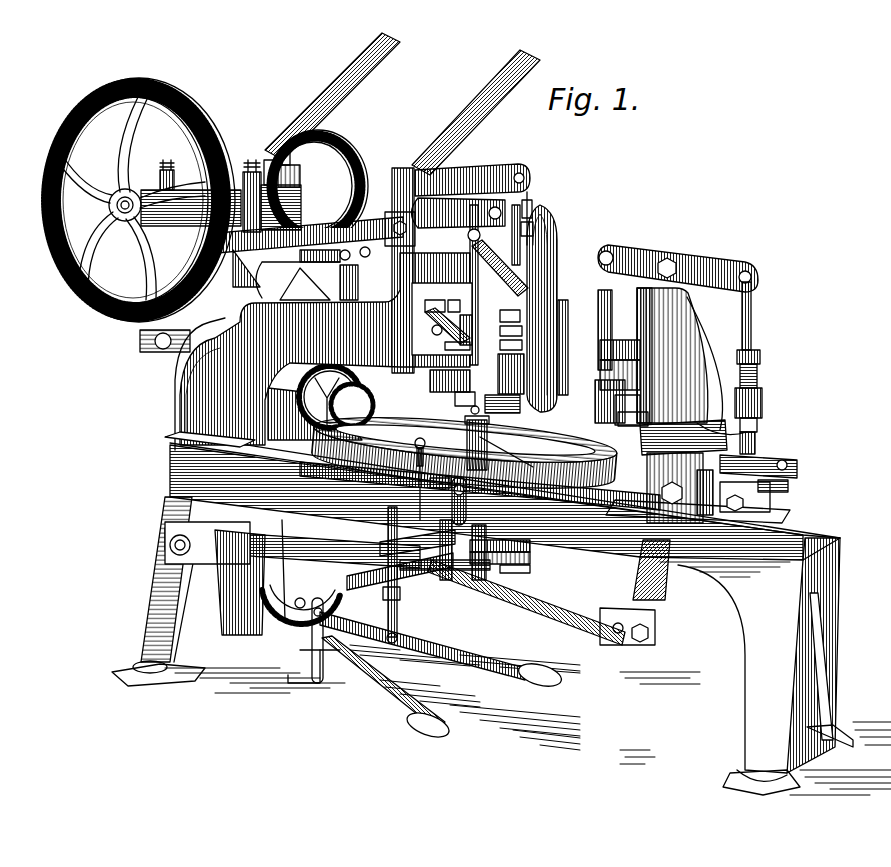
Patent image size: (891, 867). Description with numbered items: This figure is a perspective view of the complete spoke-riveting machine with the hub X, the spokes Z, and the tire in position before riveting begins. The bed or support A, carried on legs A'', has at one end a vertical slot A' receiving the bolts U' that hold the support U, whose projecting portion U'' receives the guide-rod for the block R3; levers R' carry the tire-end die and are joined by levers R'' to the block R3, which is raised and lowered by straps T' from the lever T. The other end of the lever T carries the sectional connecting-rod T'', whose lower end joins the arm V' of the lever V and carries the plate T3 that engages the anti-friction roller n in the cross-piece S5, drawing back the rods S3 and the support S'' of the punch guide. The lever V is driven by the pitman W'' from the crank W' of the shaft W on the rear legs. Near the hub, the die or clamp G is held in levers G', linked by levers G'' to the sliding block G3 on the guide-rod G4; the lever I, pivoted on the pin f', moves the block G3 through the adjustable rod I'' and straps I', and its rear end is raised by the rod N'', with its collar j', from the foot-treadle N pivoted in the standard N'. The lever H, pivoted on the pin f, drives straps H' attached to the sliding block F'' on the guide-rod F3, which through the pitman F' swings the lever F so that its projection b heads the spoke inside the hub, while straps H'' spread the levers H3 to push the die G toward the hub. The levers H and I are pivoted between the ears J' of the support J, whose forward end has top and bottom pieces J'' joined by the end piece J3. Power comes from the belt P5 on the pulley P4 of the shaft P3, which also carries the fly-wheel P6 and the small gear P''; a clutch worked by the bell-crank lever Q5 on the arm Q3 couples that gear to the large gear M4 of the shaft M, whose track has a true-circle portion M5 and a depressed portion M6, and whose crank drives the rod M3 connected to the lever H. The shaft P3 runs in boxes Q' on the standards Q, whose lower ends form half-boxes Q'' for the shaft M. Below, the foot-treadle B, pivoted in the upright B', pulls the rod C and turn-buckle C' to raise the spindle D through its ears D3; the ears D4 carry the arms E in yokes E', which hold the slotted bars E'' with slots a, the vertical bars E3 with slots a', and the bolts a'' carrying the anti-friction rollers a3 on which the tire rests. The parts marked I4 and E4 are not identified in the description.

The bed or support A is at (505, 525).
The vertical slot A' is at (707, 512).
The legs A'' is at (501, 646).
The rod M3 is at (165, 292).
The shaft P3 is at (112, 206).
The standards Q is at (191, 212).
The boxes Q' is at (177, 173).
The half-boxes Q'' is at (149, 342).
The shaft M is at (160, 348).
The small gear-wheel P'' is at (249, 188).
The arm Q3 is at (268, 160).
The bell-crank lever Q5 is at (298, 168).
The pulley P4 is at (318, 185).
The fly-wheel P6 is at (301, 96).
The belt P5 is at (476, 112).
The ears J' is at (316, 232).
The support J is at (308, 271).
The pin or bolt f is at (359, 257).
The depressed portion of track M6 is at (319, 282).
The bolt or pin f' is at (400, 262).
The lever I is at (472, 172).
The rod or pitman I'' is at (528, 218).
The straps I' is at (526, 235).
The lever H is at (459, 224).
The straps H' is at (466, 285).
The straps H'' is at (521, 266).
The end piece J3 is at (542, 308).
The levers H3 is at (572, 330).
The straps T' is at (597, 323).
The sliding block or head G3 is at (520, 318).
The levers G'' is at (540, 323).
The guide-rod G4 is at (522, 346).
The die or clamp G is at (533, 368).
The levers R'' is at (610, 341).
The levers R' is at (607, 375).
The block or box R3 is at (634, 423).
The projecting portion U'' is at (598, 401).
The bolts U' is at (618, 410).
The connecting rod or pitman F' is at (442, 319).
The sliding block or box F'' is at (455, 298).
The lever F is at (447, 326).
The guide-rod F3 is at (468, 330).
The pin I4 is at (458, 340).
The top and bottom pieces J'' is at (433, 383).
The ears D3 is at (455, 398).
The projection b is at (470, 410).
The levers G' is at (502, 408).
The anti-friction roller a3 is at (418, 440).
The gear-wheel M4 is at (342, 397).
The true-circle portion of track M5 is at (350, 402).
The rod N'' is at (309, 521).
The spokes Z is at (464, 453).
The hub X is at (470, 443).
The vertical bar E3 is at (452, 479).
The slot a' is at (448, 501).
The longitudinal slot a is at (480, 486).
The bolt a'' is at (375, 488).
The bar E'' is at (408, 531).
The slotted support or yoke E' is at (435, 550).
The arms E is at (459, 569).
The slide E4 is at (500, 556).
The projecting ears D4 is at (510, 564).
The spindle D is at (515, 562).
The swivel or turn-buckle C' is at (404, 594).
The rod C is at (398, 575).
The shaft W is at (271, 548).
The crank W' is at (215, 578).
The pitman or connecting-rod W'' is at (526, 602).
The lever V is at (635, 592).
The foot-treadle N is at (361, 631).
The upright or standard N' is at (313, 666).
The collar j' is at (297, 608).
The pendant or upright B' is at (328, 640).
The foot-treadle B is at (442, 651).
The lever T is at (678, 265).
The support U is at (692, 361).
The connecting-rod T'' is at (757, 368).
The plate T3 is at (765, 455).
The anti-friction roller n is at (785, 462).
The support S'' is at (683, 418).
The rods S3 is at (650, 445).
The cross-piece S5 is at (780, 476).
The arm V' is at (755, 497).